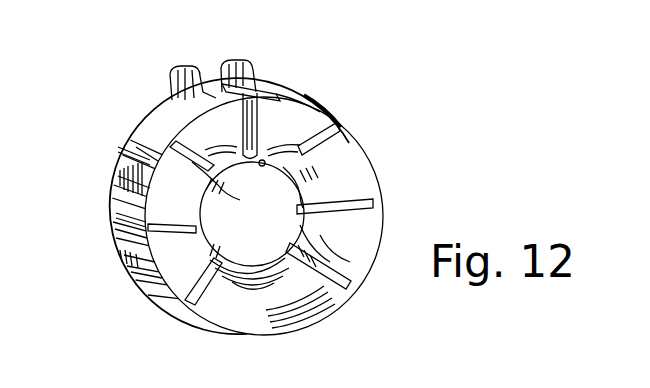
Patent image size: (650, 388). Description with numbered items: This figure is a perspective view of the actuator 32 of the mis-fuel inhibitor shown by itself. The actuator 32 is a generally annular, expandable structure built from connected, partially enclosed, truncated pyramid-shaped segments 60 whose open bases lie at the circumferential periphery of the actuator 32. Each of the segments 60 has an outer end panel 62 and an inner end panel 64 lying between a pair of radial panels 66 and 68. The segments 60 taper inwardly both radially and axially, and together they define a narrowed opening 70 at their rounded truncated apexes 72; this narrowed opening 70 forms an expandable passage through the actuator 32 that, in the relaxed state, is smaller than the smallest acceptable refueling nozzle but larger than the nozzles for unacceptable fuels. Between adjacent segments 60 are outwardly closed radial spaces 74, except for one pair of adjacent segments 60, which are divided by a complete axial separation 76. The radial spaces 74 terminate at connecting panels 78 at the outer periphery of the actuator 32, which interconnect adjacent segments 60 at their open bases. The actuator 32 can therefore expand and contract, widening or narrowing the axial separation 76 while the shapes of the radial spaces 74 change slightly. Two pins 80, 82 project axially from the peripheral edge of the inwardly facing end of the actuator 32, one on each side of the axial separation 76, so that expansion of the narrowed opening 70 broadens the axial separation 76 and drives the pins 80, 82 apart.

The actuator 32 is at (122, 92).
The truncated pyramid-shaped segments 60 is at (380, 142).
The outer end panel 62 is at (282, 258).
The inner end panel 64 is at (113, 178).
The radial panel 66 is at (340, 130).
The radial panel 68 is at (143, 153).
The narrowed opening 70 is at (287, 255).
The rounded truncated apexes 72 is at (318, 120).
The outwardly closed radial spaces 74 is at (293, 250).
The axial separation 76 is at (258, 125).
The connecting panels 78 is at (133, 127).
The pin 80 is at (228, 62).
The pin 82 is at (185, 70).